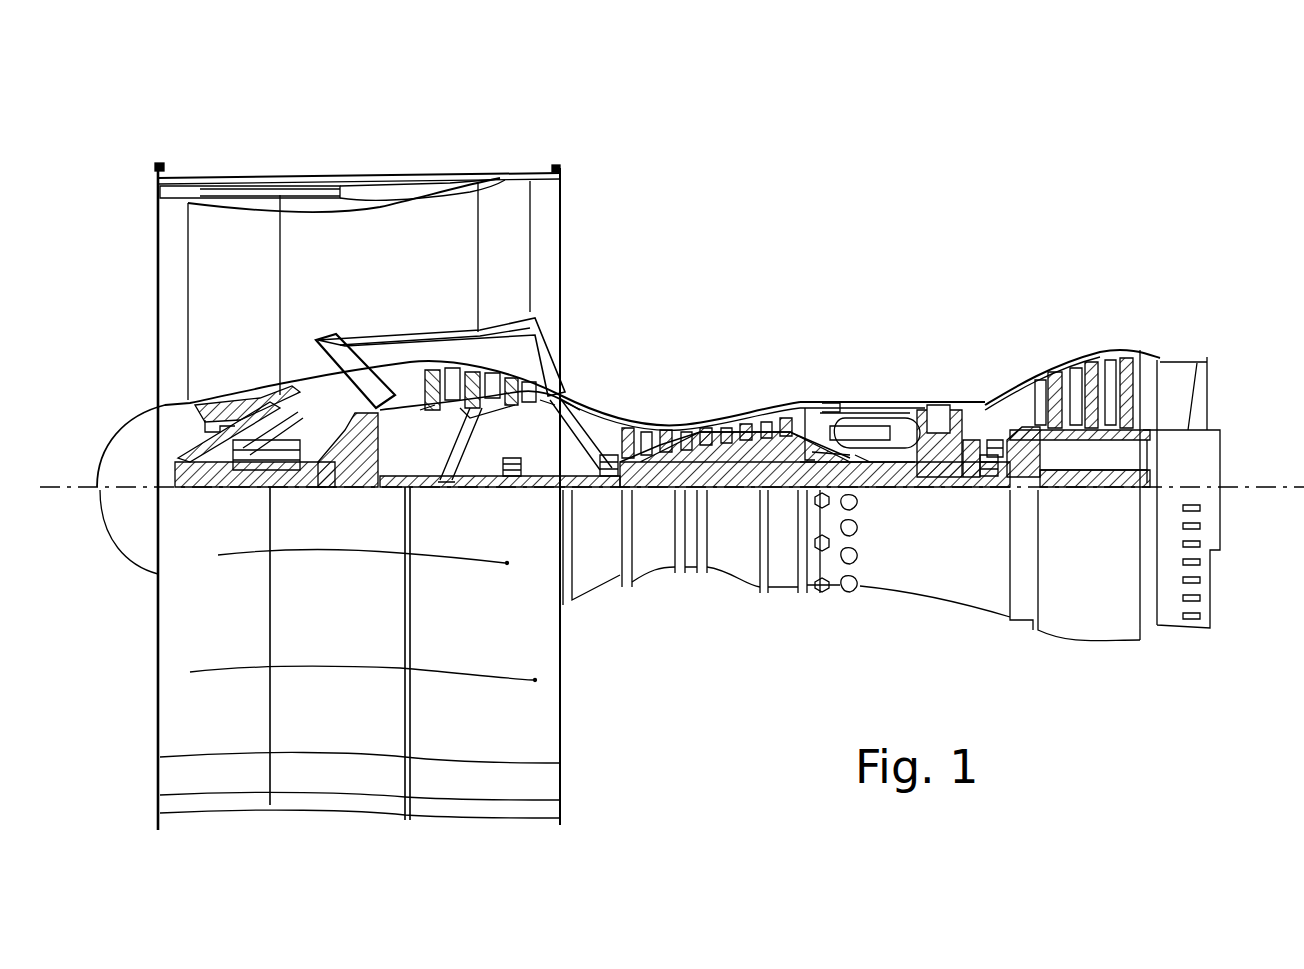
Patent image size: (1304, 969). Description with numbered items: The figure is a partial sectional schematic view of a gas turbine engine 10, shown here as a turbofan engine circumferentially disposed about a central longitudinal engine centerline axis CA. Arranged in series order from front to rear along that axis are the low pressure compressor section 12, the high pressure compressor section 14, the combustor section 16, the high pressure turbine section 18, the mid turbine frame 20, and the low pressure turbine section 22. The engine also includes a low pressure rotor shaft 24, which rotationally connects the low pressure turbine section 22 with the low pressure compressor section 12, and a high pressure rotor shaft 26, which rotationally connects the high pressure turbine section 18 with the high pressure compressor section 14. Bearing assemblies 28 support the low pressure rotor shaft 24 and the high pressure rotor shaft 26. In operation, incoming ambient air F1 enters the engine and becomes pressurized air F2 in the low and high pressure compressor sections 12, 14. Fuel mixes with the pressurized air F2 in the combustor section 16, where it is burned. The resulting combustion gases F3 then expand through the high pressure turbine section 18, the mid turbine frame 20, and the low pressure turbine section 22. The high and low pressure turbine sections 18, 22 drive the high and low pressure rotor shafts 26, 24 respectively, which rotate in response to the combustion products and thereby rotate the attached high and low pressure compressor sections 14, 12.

The gas turbine engine 10 is at (166, 118).
The low pressure compressor section 12 is at (532, 370).
The high pressure compressor section 14 is at (683, 414).
The combustor section 16 is at (884, 397).
The high pressure turbine section 18 is at (941, 398).
The mid turbine frame 20 is at (985, 400).
The low pressure turbine section 22 is at (1078, 350).
The low pressure rotor shaft 24 is at (592, 490).
The high pressure rotor shaft 26 is at (890, 490).
The bearing assemblies 28 is at (512, 481).
The engine centerline axis CA is at (68, 485).
The incoming ambient air F1 is at (302, 262).
The pressurized air F2 is at (345, 368).
The combustion gases F3 is at (1068, 356).